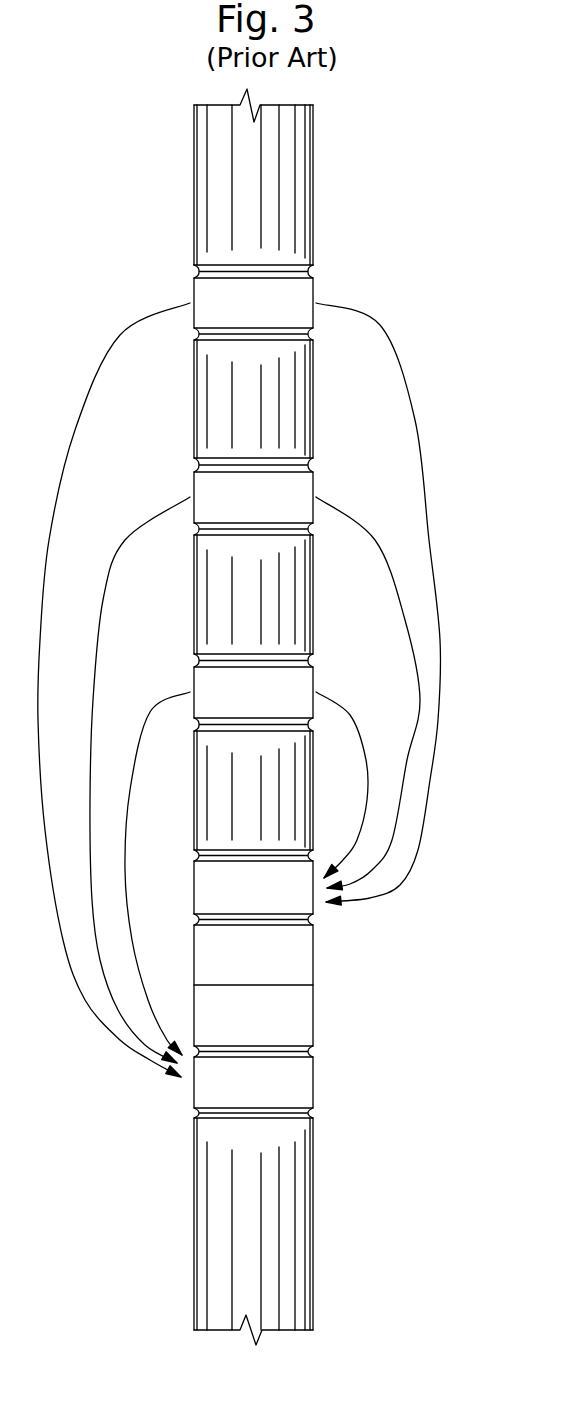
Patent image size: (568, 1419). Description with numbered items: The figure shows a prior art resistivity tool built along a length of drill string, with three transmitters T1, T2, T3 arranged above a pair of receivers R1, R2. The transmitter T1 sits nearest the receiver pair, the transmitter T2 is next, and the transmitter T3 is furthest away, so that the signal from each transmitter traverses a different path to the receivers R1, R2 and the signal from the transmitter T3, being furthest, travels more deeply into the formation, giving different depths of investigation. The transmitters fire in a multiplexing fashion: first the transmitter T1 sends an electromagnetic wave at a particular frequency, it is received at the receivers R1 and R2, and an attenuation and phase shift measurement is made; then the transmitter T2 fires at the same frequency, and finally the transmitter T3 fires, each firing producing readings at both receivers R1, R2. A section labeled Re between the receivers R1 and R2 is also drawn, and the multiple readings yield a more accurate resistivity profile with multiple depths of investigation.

The transmitter T3 is at (253, 303).
The transmitter T2 is at (253, 497).
The transmitter T1 is at (253, 692).
The receiver R1 is at (253, 887).
The receiver R2 is at (253, 1082).
The electrode / reference section Re is at (313, 985).